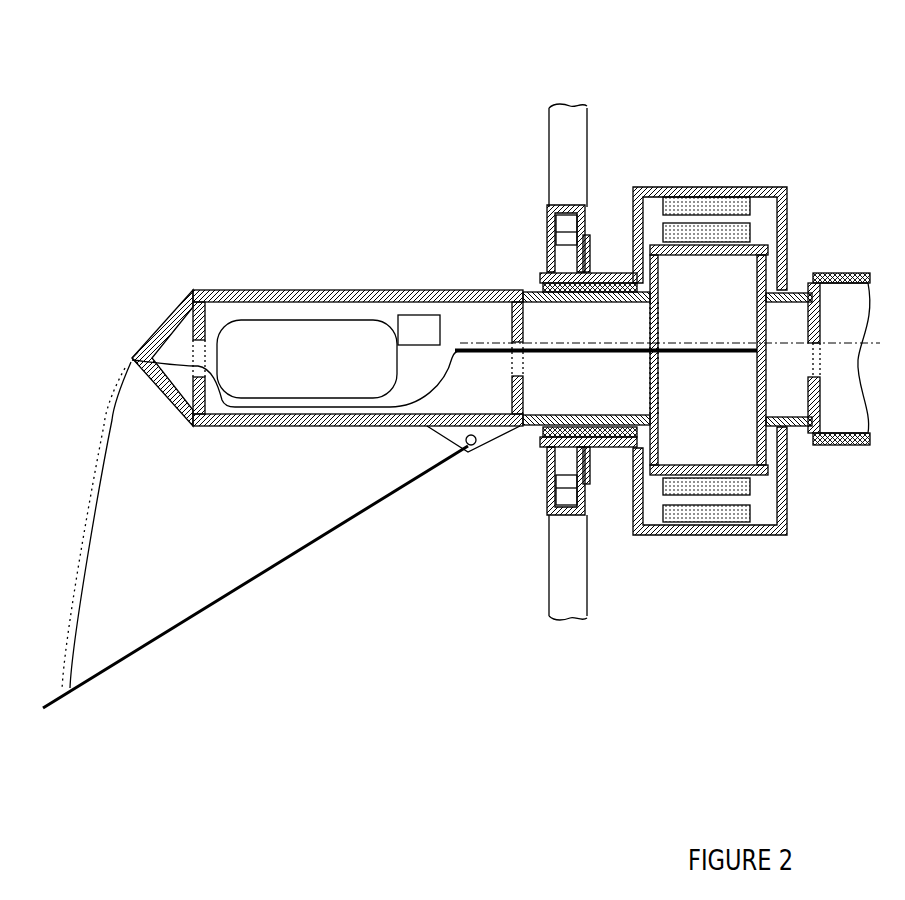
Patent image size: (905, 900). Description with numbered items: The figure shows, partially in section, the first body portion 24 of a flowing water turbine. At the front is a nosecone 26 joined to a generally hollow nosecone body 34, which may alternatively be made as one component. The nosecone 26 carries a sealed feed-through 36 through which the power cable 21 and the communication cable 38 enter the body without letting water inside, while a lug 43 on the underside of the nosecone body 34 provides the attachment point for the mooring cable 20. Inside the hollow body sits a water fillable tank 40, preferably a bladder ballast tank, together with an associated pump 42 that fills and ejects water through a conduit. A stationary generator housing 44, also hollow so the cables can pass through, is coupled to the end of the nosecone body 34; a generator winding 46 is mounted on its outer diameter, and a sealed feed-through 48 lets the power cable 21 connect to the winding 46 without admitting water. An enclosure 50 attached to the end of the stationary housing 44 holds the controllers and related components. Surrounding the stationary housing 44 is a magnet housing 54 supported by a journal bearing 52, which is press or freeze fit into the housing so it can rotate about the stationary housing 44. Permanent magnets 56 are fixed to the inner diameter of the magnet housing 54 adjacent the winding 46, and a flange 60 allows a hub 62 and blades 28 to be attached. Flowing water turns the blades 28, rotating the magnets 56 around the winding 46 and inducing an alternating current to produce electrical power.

The mooring cable 20 is at (195, 617).
The power cable 21 is at (84, 565).
The first body portion 24 is at (271, 82).
The nosecone 26 is at (180, 304).
The blades 28 is at (549, 126).
The nosecone body 34 is at (258, 290).
The sealed feed-through 36 is at (132, 357).
The communication cable 38 is at (90, 491).
The water fillable tank 40 is at (321, 320).
The pump 42 is at (403, 315).
The lug 43 is at (478, 455).
The stationary generator housing 44 is at (527, 430).
The generator winding 46 is at (657, 487).
The sealed feed-through 48 is at (758, 483).
The enclosure 50 is at (822, 275).
The journal bearing 52 is at (542, 272).
The magnet housing 54 is at (748, 187).
The permanent magnets 56 is at (720, 520).
The flange 60 is at (593, 253).
The hub 62 is at (541, 497).